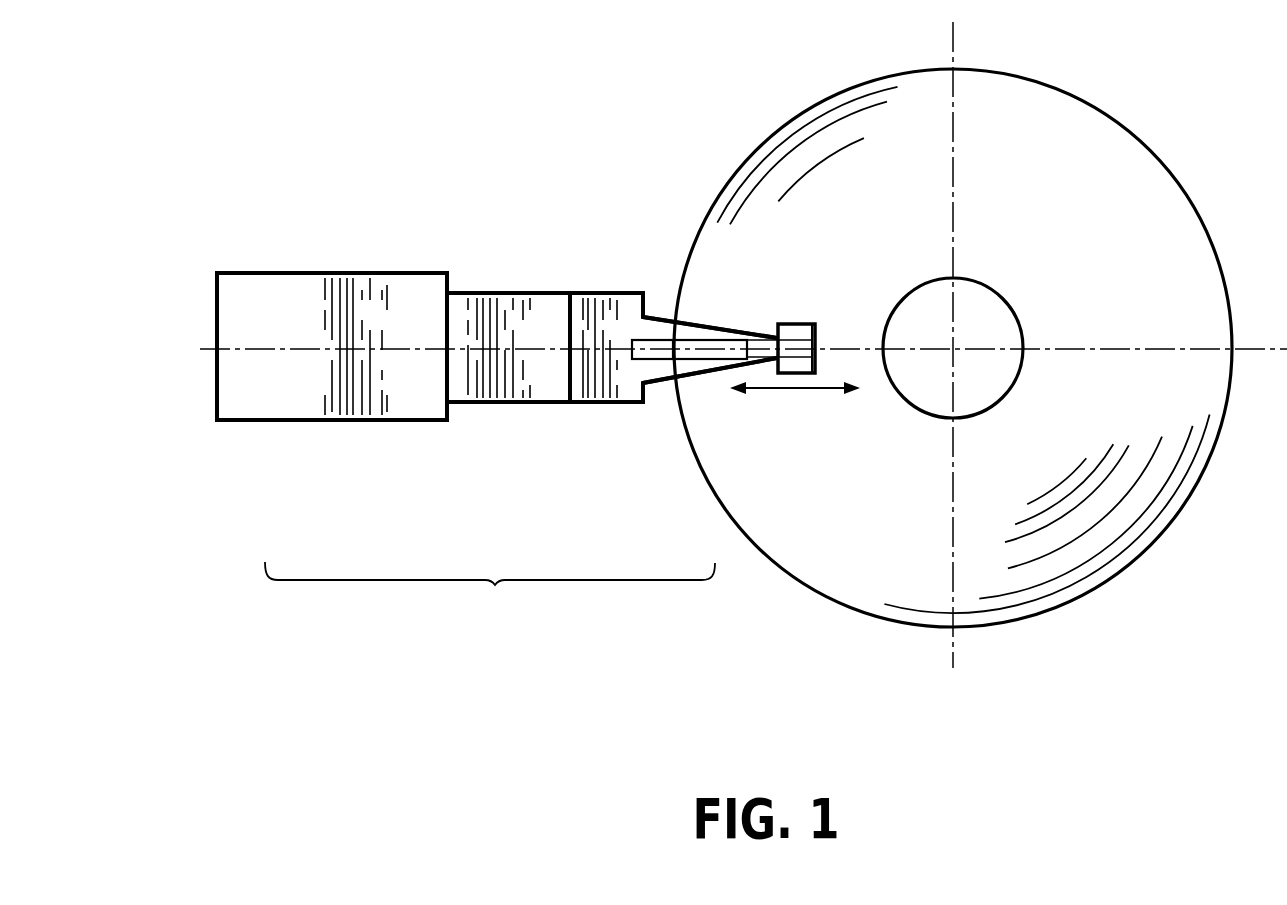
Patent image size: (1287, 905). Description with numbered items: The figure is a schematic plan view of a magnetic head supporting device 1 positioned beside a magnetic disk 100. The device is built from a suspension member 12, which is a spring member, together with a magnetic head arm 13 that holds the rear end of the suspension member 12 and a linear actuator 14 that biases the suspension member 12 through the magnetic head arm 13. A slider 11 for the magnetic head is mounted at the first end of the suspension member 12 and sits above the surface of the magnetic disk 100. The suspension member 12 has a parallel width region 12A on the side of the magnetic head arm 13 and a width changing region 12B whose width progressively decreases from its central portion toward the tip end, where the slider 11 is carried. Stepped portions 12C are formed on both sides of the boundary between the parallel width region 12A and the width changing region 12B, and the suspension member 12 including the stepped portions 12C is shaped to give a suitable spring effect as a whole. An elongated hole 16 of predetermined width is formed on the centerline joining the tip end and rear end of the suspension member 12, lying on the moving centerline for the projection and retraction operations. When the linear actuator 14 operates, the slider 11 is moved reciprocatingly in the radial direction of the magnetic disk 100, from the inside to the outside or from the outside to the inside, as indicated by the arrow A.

The magnetic head supporting device 1 is at (495, 585).
The slider 11 is at (790, 367).
The suspension member 12 is at (603, 293).
The parallel width region 12A is at (580, 403).
The width changing region 12B is at (693, 367).
The stepped portions 12C is at (655, 315).
The magnetic head arm 13 is at (512, 293).
The linear actuator 14 is at (305, 400).
The elongated hole 16 is at (663, 358).
The arrow A is at (810, 388).
The magnetic disk 100 is at (1048, 117).